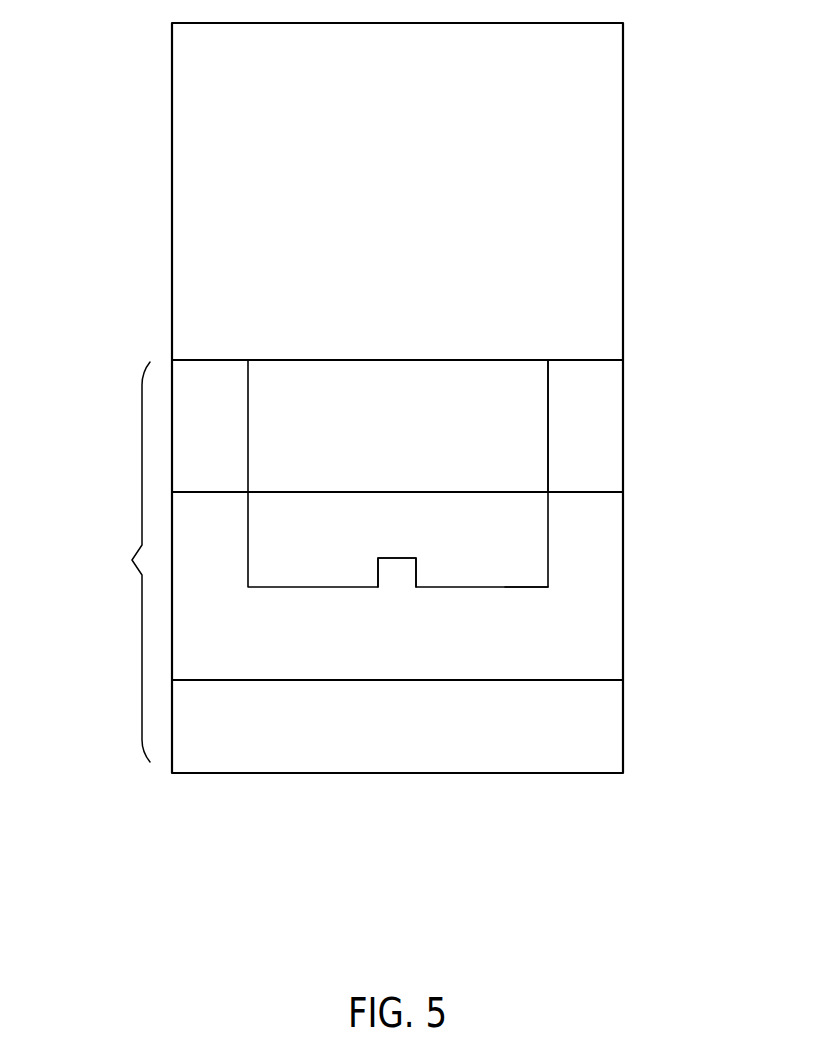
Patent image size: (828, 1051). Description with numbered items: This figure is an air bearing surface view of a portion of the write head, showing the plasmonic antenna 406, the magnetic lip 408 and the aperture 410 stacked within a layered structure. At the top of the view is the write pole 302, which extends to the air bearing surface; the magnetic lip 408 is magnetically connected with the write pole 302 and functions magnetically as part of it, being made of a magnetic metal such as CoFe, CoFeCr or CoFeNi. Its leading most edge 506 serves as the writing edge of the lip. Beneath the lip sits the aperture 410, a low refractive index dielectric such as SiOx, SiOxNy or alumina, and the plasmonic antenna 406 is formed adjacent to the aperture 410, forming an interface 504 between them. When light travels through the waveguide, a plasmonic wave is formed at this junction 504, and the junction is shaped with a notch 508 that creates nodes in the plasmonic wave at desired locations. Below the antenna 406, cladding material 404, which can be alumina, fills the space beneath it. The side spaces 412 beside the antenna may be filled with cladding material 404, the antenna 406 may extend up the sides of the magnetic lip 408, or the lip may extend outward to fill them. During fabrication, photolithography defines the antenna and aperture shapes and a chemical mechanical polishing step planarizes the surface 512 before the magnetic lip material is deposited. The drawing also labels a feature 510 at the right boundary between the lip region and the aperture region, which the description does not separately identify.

The write pole 302 is at (456, 189).
The cladding material 404 is at (462, 720).
The plasmonic antenna 406 is at (200, 393).
The magnetic lip 408 is at (449, 419).
The aperture 410 is at (370, 525).
The side space 412 is at (141, 415).
The interface 504 is at (510, 587).
The leading most edge 506 is at (313, 492).
The notch 508 is at (417, 578).
The interface edge 510 is at (593, 491).
The surface 512 is at (568, 360).